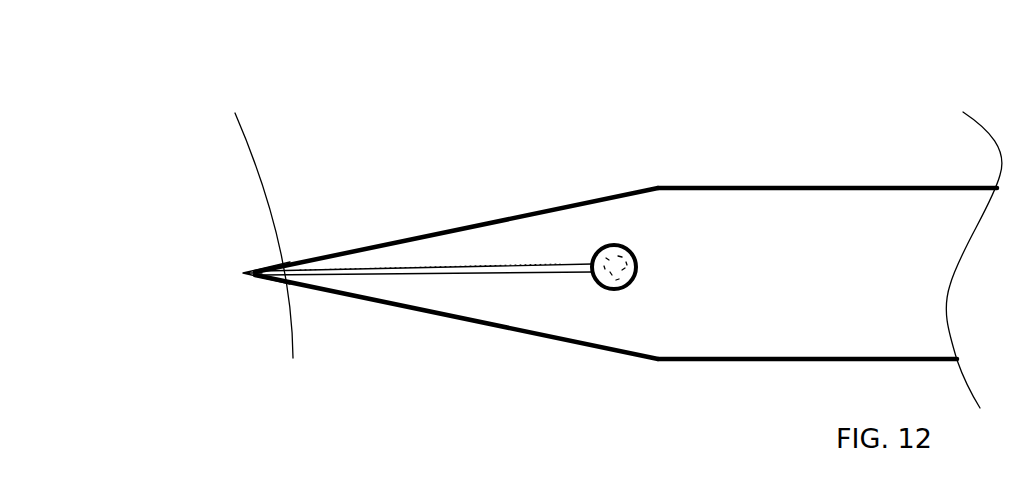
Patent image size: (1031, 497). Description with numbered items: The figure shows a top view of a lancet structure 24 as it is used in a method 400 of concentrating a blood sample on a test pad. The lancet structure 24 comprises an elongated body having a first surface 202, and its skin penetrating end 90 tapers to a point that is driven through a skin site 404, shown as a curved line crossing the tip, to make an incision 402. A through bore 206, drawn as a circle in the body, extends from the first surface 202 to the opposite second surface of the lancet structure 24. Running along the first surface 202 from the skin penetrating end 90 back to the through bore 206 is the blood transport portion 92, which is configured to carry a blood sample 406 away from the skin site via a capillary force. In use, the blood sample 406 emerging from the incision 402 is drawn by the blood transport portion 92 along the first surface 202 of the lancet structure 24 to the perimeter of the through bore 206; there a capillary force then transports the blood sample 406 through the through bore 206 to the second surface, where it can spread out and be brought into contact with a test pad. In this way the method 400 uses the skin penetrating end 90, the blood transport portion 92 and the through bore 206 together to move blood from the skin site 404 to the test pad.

The method of concentrating a blood sample on a test pad 400 is at (190, 97).
The skin site 404 is at (265, 143).
The incision 402 is at (267, 285).
The skin penetrating end 90 is at (320, 255).
The blood transport portion 92 is at (432, 265).
The blood sample 406 is at (345, 277).
The through bore 206 is at (636, 258).
The lancet structure 24 is at (726, 185).
The first surface 202 is at (785, 336).